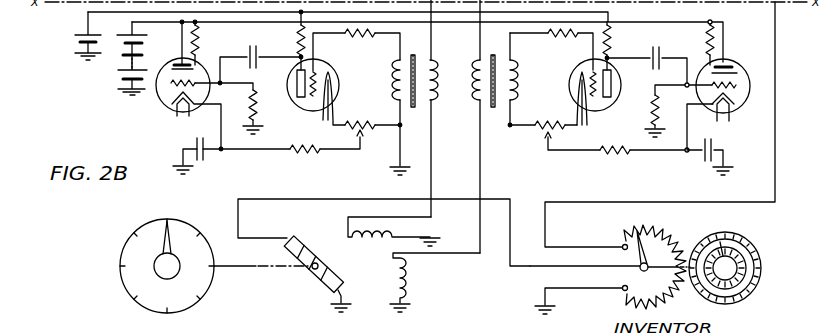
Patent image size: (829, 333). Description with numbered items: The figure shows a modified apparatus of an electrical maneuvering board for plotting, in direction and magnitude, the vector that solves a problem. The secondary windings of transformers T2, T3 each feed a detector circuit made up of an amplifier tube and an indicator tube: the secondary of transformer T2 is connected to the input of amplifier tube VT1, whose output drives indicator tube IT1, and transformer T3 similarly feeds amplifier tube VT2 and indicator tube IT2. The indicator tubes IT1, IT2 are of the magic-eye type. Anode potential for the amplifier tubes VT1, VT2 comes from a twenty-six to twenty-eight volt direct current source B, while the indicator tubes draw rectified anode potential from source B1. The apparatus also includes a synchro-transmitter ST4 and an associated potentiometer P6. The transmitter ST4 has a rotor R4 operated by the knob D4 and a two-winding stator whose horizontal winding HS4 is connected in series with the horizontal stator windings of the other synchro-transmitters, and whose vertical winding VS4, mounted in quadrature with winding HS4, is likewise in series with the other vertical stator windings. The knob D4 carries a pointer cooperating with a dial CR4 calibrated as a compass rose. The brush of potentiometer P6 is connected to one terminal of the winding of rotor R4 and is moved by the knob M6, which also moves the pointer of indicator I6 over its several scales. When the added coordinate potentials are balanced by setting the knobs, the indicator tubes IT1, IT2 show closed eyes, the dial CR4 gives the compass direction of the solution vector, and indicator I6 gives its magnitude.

The direct current source B is at (77, 47).
The rectified anode potential source B1 is at (141, 50).
The indicator tube IT1 is at (165, 106).
The amplifier tube VT1 is at (334, 88).
The transformer T2 is at (416, 108).
The transformer T3 is at (492, 110).
The amplifier tube VT2 is at (572, 89).
The indicator tube IT2 is at (741, 110).
The synchro-transmitter ST4 is at (384, 224).
The horizontal stator winding HS4 is at (349, 236).
The vertical stator winding VS4 is at (394, 268).
The rotor R4 is at (318, 262).
The dial CR4 is at (148, 231).
The knob D4 is at (158, 271).
The potentiometer P6 is at (637, 231).
The knob M6 is at (736, 267).
The indicator I6 is at (751, 287).